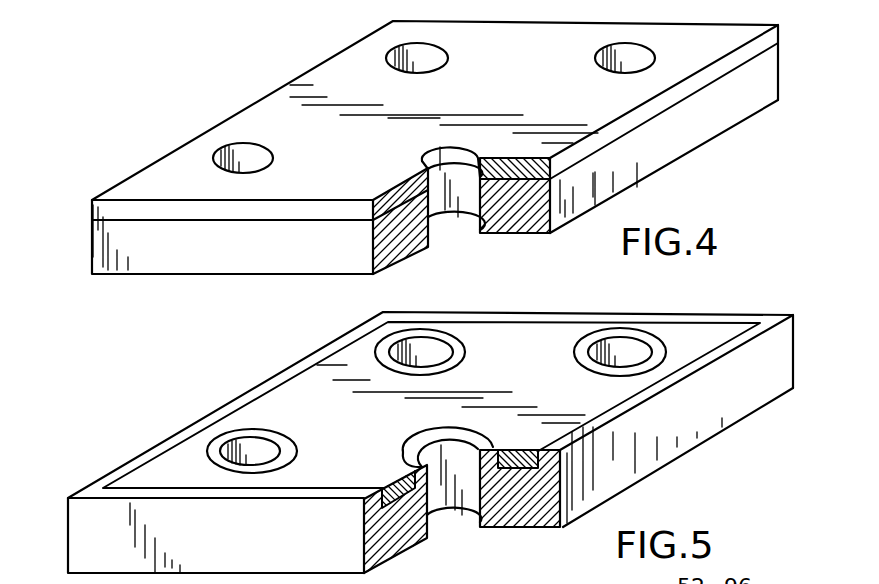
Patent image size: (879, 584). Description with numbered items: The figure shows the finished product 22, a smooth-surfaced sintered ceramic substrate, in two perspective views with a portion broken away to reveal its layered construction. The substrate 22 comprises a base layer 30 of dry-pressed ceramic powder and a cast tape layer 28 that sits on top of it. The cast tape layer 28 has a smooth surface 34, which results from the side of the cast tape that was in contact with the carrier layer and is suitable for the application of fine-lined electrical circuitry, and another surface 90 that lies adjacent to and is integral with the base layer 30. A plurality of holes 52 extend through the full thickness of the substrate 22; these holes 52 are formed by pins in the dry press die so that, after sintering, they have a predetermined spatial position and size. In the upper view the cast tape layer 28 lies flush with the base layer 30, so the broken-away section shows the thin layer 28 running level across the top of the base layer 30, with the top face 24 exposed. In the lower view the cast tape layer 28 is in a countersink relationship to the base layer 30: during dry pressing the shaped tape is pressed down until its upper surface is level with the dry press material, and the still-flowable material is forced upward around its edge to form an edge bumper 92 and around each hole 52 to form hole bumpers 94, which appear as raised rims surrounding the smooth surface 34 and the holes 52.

In FIG. 4, the finished product 22 is at (196, 67).
In FIG. 5, the finished product 22 is at (430, 442).
In FIG. 4, the top surface of plate 24 is at (323, 188).
In FIG. 4, the cast tape layer 28 is at (640, 117).
In FIG. 4, the base layer 30 is at (610, 185).
In FIG. 4, the holes 52 is at (398, 52).
In FIG. 5, the holes 52 is at (243, 440).
In FIG. 4, the other surface 90 is at (620, 142).
In FIG. 5, the smooth surface 34 is at (527, 342).
In FIG. 5, the edge bumper 92 is at (622, 408).
In FIG. 5, the hole bumpers 94 is at (207, 453).